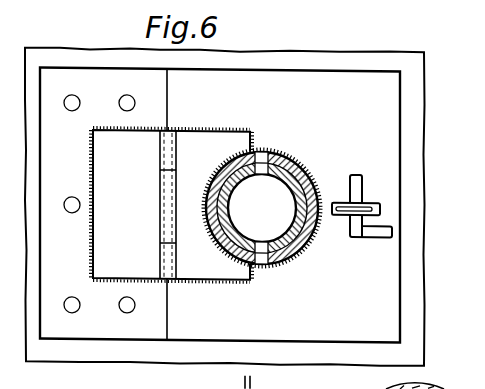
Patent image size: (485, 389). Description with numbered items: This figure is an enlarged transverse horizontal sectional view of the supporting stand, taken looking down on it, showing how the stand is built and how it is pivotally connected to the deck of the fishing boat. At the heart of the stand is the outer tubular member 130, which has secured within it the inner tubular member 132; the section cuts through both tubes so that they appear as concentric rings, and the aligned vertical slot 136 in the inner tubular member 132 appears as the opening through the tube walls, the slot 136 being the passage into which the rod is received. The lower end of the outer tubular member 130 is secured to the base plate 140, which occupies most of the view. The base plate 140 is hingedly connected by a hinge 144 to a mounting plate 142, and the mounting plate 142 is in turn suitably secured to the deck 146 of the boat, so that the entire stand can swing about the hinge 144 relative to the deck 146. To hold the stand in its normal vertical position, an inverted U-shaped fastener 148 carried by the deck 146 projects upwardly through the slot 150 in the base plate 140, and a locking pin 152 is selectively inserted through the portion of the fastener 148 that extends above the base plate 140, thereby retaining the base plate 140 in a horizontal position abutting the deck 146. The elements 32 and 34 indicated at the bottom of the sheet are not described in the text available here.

The shaft 32 is at (245, 386).
The pin 34 is at (238, 373).
The outer tubular member 130 is at (311, 242).
The inner tubular member 132 is at (297, 160).
The vertical slot 136 is at (262, 239).
The base plate 140 is at (401, 290).
The mounting plate 142 is at (80, 321).
The hinge 144 is at (217, 260).
The deck 146 is at (420, 338).
The inverted U-shaped fastener 148 is at (367, 198).
The slot 150 is at (380, 206).
The locking pin 152 is at (360, 224).